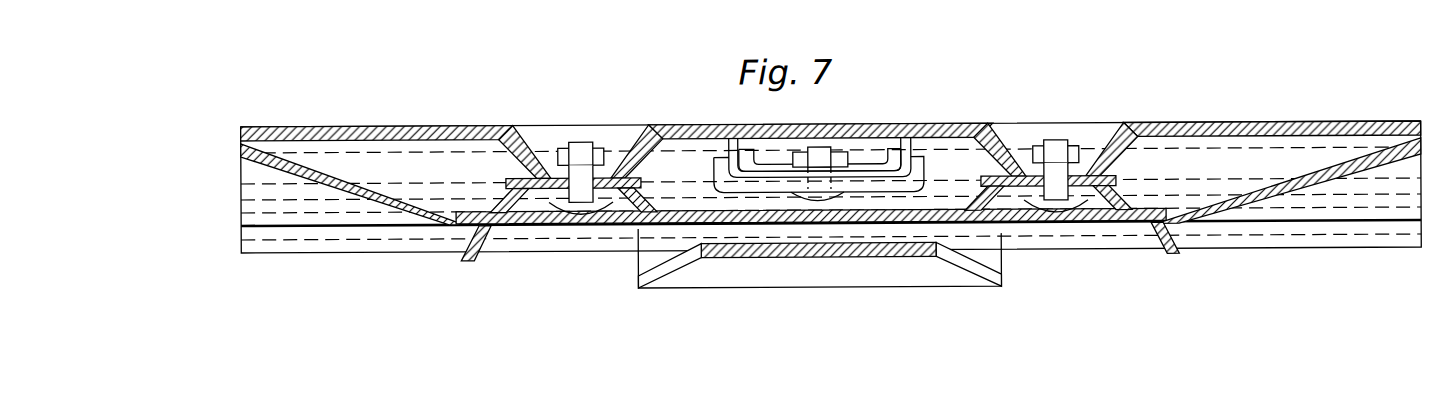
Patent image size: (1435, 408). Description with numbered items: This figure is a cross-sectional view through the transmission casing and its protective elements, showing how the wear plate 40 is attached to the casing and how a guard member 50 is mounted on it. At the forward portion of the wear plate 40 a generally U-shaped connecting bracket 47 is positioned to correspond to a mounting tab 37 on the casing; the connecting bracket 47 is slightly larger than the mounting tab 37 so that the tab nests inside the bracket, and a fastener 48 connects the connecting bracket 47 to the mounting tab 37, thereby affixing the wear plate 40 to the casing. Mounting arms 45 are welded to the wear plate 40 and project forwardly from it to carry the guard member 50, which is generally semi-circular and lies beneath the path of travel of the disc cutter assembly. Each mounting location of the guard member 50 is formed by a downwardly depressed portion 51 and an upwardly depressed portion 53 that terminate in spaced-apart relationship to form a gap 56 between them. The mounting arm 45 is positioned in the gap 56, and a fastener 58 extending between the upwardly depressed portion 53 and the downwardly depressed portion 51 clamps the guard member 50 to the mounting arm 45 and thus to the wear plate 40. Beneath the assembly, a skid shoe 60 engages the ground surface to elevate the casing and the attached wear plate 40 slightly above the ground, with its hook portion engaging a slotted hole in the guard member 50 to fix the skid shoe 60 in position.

The mounting tab 37 is at (880, 163).
The wear plate 40 is at (338, 254).
The mounting arm 45 is at (472, 264).
The connecting bracket 47 is at (923, 169).
The fastener 48 is at (790, 166).
The guard member 50 is at (1276, 206).
The downwardly depressed portion 51 is at (548, 152).
The upwardly depressed portion 53 is at (548, 219).
The gap 56 is at (513, 171).
The fastener 58 is at (583, 214).
The skid shoe 60 is at (980, 293).